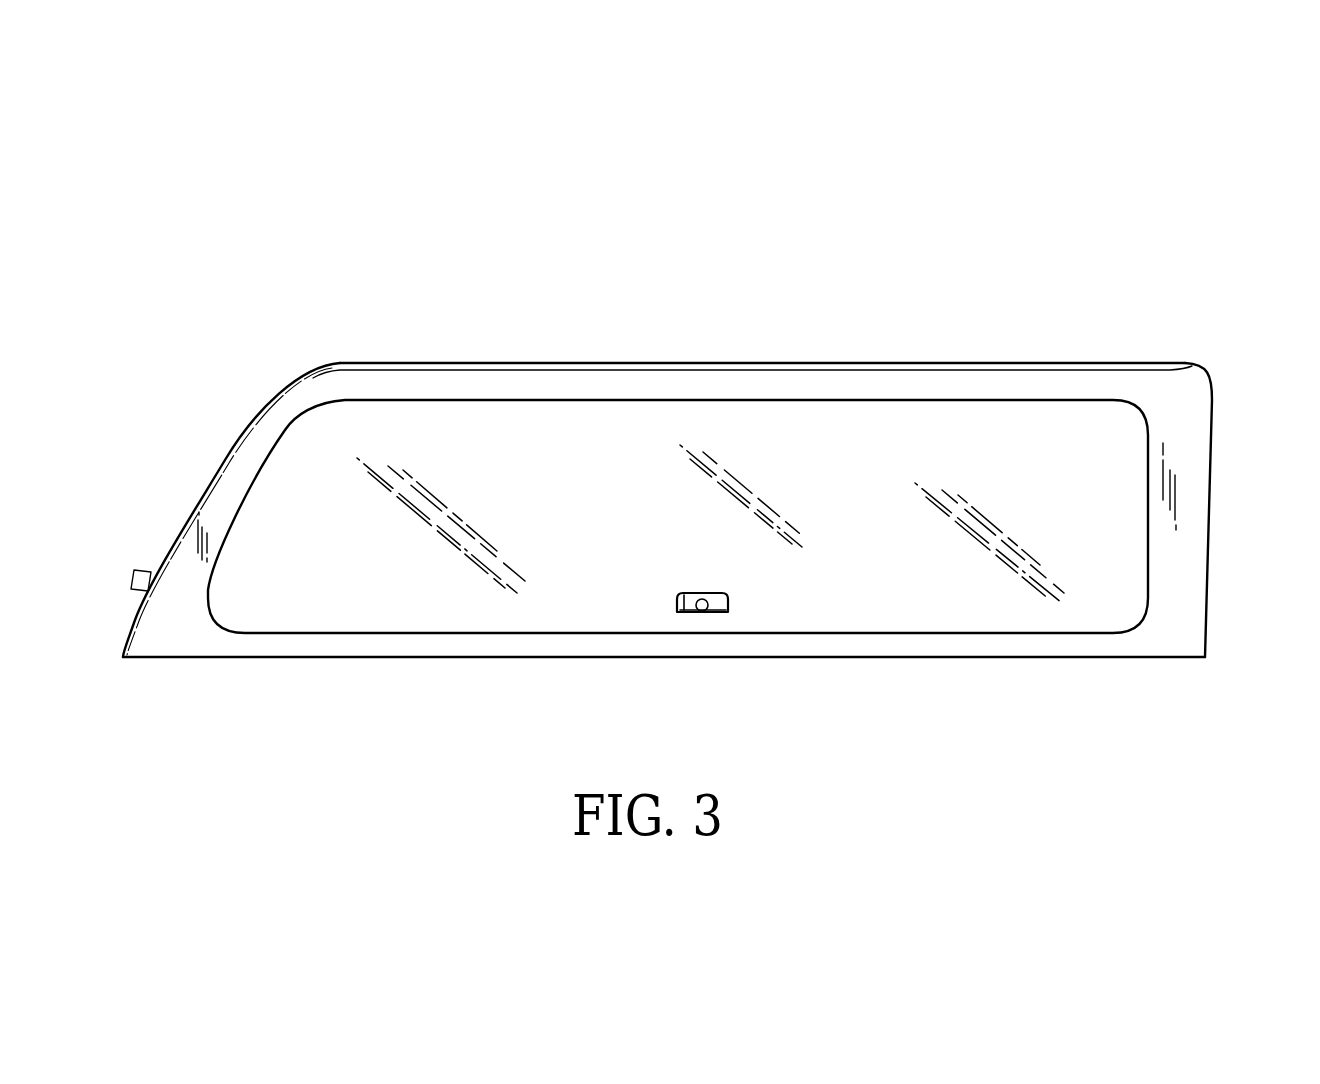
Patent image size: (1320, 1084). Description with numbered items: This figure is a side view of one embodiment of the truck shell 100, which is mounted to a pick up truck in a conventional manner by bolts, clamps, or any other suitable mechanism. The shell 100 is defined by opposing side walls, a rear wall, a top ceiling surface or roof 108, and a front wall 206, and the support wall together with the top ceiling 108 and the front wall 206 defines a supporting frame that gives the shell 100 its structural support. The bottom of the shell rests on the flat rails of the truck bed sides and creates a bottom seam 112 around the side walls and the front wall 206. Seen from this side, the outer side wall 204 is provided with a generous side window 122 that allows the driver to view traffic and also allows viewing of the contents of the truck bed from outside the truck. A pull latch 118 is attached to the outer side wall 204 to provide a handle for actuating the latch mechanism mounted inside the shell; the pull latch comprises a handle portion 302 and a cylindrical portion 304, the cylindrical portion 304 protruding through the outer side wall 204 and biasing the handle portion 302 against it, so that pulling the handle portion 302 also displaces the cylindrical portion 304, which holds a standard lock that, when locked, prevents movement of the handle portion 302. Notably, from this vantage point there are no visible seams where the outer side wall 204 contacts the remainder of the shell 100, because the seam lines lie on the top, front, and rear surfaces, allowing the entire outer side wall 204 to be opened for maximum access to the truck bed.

The truck shell 100 is at (713, 184).
The top ceiling surface or roof 108 is at (1097, 363).
The bottom seam 112 is at (373, 657).
The pull latch 118 is at (728, 596).
The side window 122 is at (498, 447).
The outer side wall 204 is at (307, 405).
The front wall 206 is at (1211, 477).
The handle portion 302 is at (675, 603).
The cylindrical portion 304 is at (692, 613).